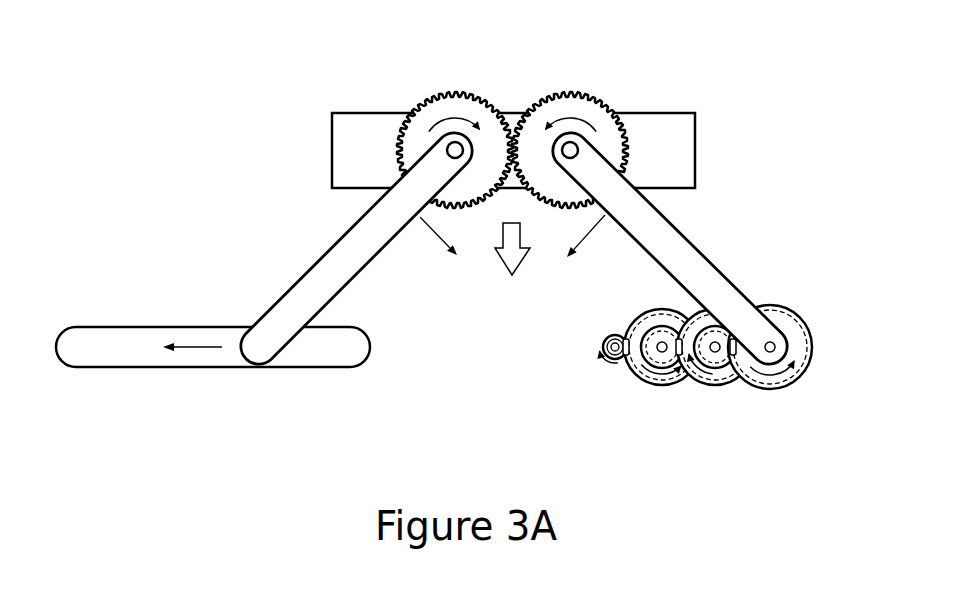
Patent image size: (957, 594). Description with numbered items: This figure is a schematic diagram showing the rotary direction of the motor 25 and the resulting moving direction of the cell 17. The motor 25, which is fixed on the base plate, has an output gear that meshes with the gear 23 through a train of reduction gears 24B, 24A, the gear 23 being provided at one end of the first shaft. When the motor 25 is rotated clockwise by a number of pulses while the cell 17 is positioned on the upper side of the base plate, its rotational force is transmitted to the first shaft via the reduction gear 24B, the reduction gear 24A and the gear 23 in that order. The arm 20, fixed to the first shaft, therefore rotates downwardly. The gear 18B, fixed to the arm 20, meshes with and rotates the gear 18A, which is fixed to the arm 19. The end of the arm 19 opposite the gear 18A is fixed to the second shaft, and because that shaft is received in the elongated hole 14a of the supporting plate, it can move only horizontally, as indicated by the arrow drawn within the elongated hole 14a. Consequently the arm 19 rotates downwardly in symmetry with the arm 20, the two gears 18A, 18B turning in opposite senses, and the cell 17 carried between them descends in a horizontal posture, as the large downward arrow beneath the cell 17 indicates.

The elongated hole 14a is at (95, 366).
The cell 17 is at (697, 145).
The gear 18A is at (455, 93).
The gear 18B is at (572, 93).
The arm 19 is at (317, 272).
The arm 20 is at (692, 255).
The gear 23 is at (767, 391).
The reduction gear 24A is at (700, 386).
The reduction gear 24B is at (635, 378).
The motor 25 is at (615, 337).